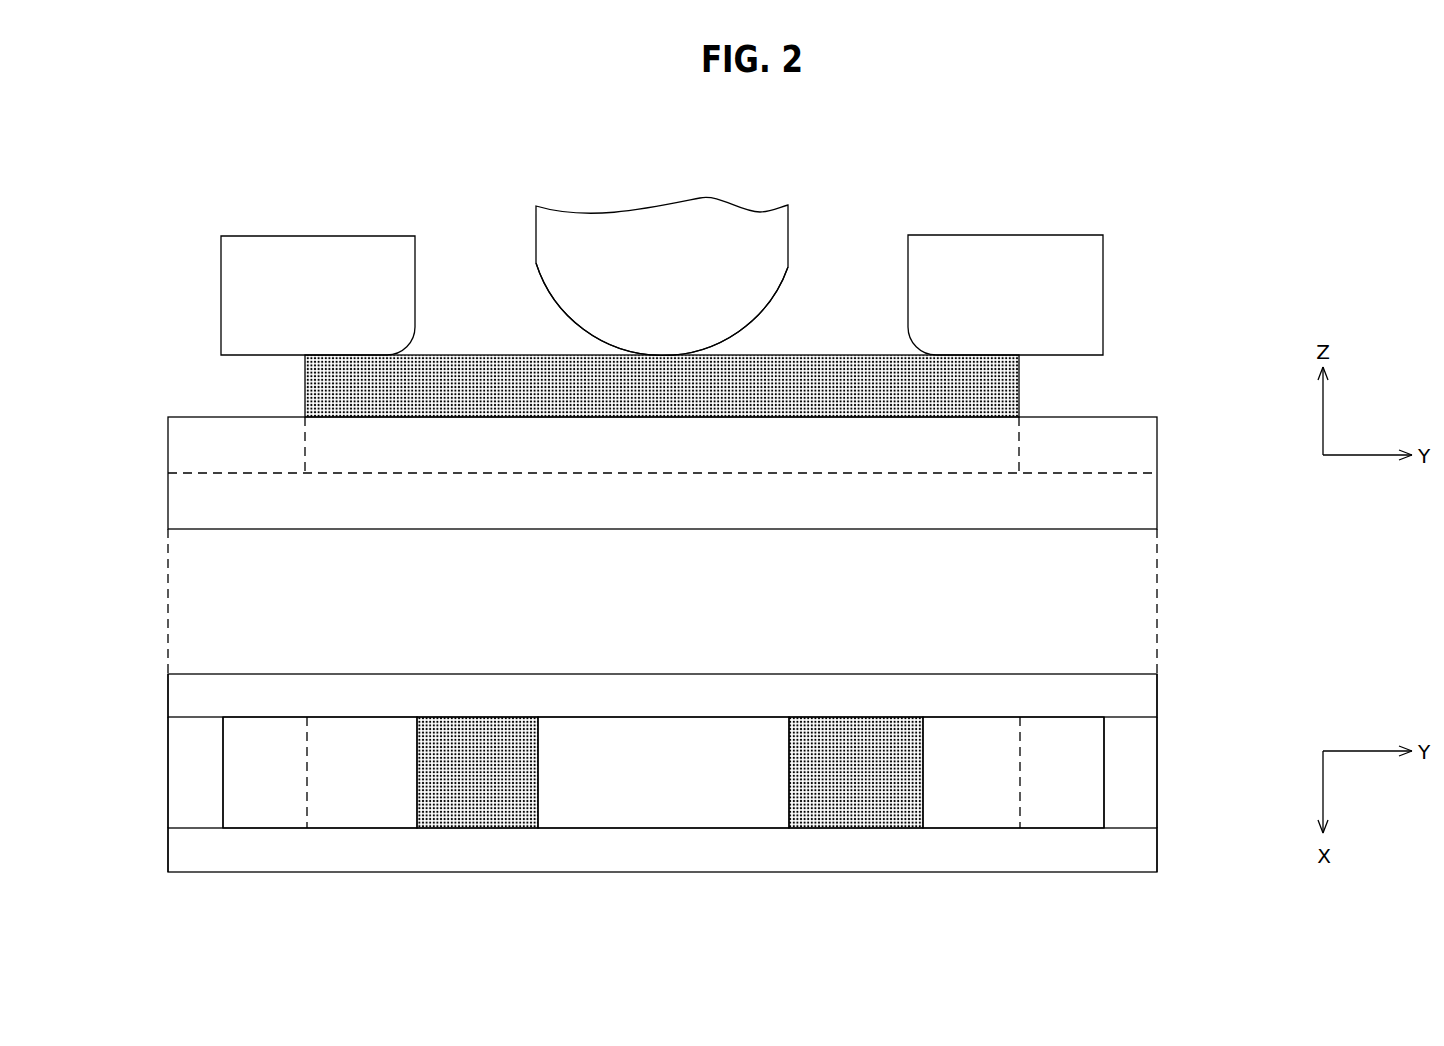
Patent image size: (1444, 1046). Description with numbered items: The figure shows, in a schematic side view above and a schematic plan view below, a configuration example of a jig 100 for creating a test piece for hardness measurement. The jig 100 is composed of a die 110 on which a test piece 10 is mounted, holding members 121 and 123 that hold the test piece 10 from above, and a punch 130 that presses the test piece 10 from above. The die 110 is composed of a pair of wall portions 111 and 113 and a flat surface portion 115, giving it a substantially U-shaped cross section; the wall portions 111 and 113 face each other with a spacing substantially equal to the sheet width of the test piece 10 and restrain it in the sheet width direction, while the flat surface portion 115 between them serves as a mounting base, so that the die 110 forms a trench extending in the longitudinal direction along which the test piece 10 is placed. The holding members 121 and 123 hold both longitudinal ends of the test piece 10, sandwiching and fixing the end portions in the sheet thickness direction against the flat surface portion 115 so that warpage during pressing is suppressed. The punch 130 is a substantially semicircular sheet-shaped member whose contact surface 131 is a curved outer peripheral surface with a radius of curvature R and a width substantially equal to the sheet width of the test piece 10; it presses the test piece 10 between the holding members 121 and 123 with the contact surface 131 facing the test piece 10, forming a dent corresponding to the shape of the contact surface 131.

The jig 100 is at (1213, 259).
The die 110 is at (1176, 409).
The wall portion 111 is at (1146, 442).
The wall portion 113 is at (1146, 695).
The flat surface portion 115 is at (190, 473).
The test piece 10 is at (1012, 381).
The holding member 121 is at (1046, 252).
The holding member 123 is at (275, 253).
The punch 130 is at (706, 215).
The contact surface 131 is at (778, 297).